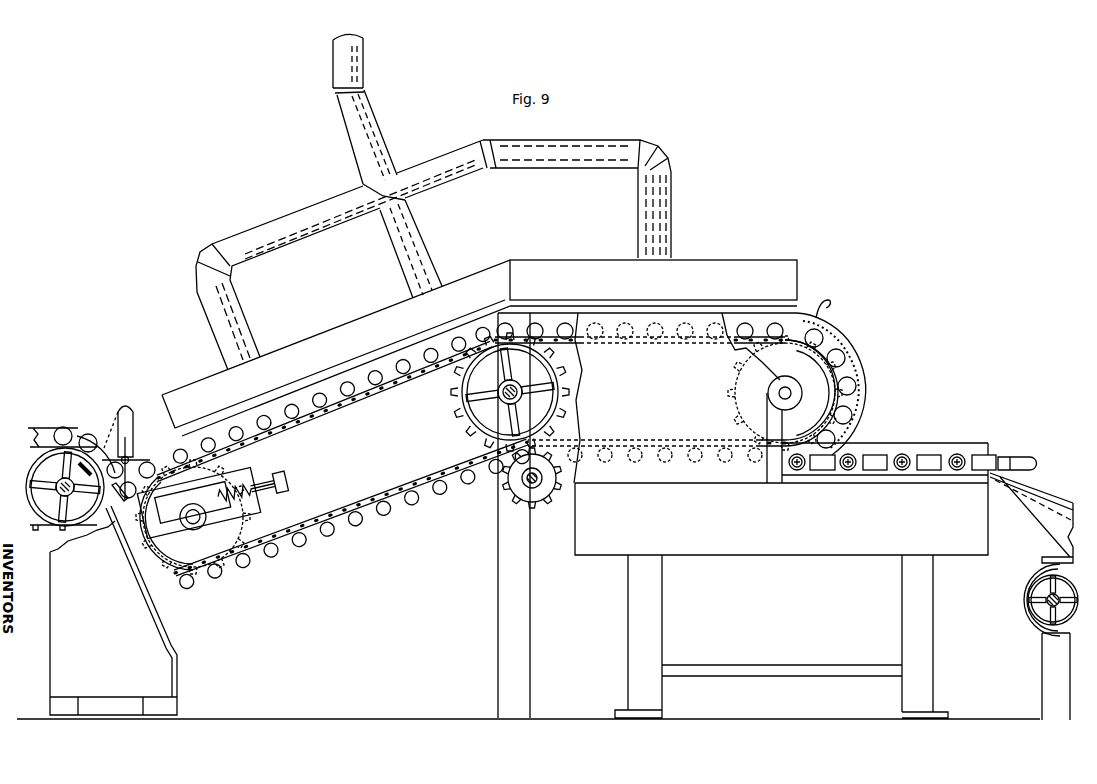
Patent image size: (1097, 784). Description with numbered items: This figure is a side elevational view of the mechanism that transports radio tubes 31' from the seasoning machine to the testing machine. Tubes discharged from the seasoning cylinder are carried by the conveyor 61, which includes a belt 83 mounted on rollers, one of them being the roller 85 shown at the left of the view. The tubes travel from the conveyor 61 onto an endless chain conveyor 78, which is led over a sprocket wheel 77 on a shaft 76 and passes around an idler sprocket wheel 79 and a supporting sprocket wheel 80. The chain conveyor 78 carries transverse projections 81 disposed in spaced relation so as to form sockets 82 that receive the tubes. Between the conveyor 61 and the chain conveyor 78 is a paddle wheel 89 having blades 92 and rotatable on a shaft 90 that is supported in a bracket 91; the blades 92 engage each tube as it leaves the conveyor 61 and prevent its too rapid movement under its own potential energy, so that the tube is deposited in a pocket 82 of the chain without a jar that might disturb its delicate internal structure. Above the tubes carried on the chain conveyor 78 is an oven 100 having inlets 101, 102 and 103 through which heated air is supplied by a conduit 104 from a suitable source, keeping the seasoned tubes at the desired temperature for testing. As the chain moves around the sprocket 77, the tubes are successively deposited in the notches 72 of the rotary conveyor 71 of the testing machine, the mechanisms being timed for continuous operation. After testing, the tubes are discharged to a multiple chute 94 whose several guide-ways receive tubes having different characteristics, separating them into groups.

The radio tube 31' is at (549, 399).
The conveyor 61 is at (42, 437).
The rotary conveyor 71 is at (917, 443).
The notches 72 is at (860, 453).
The shaft 76 is at (782, 393).
The sprocket wheel 77 is at (733, 372).
The endless chain conveyor 78 is at (628, 345).
The idler sprocket wheel 79 is at (257, 530).
The supporting sprocket wheel 80 is at (473, 423).
The transverse projections 81 is at (297, 543).
The sockets 82 is at (258, 557).
The belt 83 is at (77, 443).
The roller 85 is at (37, 467).
The paddle wheel 89 is at (134, 455).
The shaft 90 is at (132, 458).
The bracket 91 is at (125, 407).
The blades 92 is at (117, 512).
The multiple chute 94 is at (1053, 497).
The oven 100 is at (725, 267).
The inlet 101 is at (668, 217).
The inlet 102 is at (427, 247).
The inlet 103 is at (243, 322).
The conduit 104 is at (378, 126).